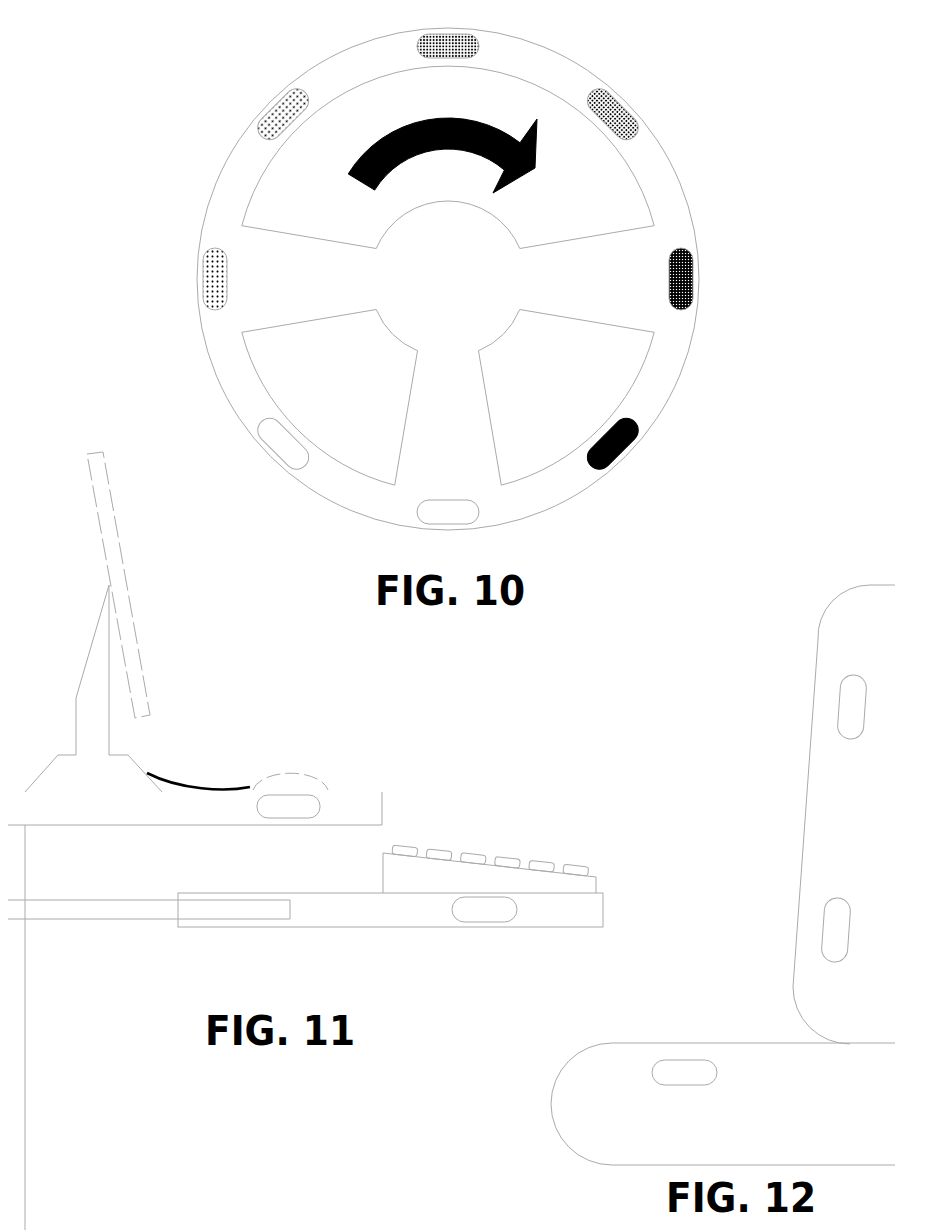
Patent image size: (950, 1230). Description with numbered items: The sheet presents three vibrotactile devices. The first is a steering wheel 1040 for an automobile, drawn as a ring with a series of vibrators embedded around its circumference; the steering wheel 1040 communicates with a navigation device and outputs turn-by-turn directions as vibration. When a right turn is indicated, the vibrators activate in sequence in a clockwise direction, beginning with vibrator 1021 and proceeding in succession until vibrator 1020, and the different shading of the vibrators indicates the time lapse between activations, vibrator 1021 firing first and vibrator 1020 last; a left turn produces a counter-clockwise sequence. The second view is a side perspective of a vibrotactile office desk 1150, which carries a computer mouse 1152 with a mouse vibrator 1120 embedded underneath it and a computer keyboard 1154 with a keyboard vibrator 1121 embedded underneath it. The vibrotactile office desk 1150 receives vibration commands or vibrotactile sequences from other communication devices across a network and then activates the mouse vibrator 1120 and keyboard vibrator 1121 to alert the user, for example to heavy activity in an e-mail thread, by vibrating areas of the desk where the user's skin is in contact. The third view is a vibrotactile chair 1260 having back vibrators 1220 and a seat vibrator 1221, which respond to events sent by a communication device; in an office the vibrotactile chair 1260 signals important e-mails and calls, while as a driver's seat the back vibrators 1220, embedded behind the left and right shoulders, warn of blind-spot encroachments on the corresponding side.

In FIG. 10, the steering wheel 1040 is at (335, 50).
In FIG. 10, the vibrator 1021 is at (204, 279).
In FIG. 10, the vibrator 1020 is at (624, 449).
In FIG. 11, the computer mouse 1152 is at (297, 772).
In FIG. 11, the mouse vibrator 1120 is at (328, 788).
In FIG. 11, the computer keyboard 1154 is at (463, 855).
In FIG. 11, the vibrotactile office desk 1150 is at (76, 919).
In FIG. 11, the keyboard vibrator 1121 is at (485, 922).
In FIG. 12, the vibrotactile chair 1260 is at (860, 587).
In FIG. 12, the back vibrators 1220 is at (838, 703).
In FIG. 12, the seat vibrator 1221 is at (682, 1060).